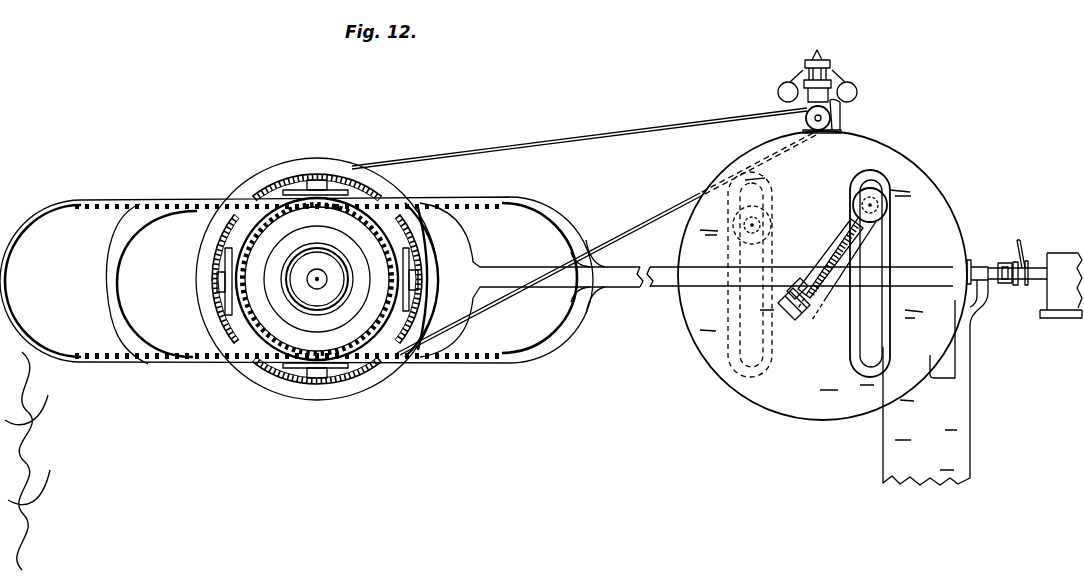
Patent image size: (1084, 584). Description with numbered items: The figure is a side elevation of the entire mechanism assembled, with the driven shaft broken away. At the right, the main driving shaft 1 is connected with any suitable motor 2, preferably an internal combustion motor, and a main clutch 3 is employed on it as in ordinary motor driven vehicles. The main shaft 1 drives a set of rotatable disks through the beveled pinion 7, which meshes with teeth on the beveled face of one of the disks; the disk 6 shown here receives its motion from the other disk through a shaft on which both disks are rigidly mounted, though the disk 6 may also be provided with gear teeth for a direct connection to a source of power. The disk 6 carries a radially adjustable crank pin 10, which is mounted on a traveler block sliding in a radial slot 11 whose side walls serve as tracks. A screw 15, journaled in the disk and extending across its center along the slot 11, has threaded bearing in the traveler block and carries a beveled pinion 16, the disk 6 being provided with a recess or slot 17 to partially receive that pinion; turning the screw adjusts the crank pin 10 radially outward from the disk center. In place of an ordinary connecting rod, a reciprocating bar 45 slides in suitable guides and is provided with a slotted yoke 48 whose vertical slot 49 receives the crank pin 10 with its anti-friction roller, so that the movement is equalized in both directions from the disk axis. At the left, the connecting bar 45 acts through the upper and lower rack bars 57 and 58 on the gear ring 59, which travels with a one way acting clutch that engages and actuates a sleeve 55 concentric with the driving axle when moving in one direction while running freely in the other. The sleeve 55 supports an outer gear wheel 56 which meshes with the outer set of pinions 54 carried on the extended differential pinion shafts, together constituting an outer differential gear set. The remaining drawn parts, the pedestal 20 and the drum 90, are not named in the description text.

The main driving shaft 1 is at (1034, 266).
The motor 2 is at (1061, 285).
The main clutch 3 is at (1017, 280).
The disk 6 is at (924, 180).
The beveled pinion 7 is at (972, 262).
The crank pin 10 is at (742, 223).
The radial slot 11 is at (838, 230).
The screw 15 is at (826, 262).
The beveled pinion 16 is at (790, 322).
The recess or slot 17 is at (812, 318).
The pedestal 20 is at (926, 392).
The reciprocating bar 45 is at (528, 270).
The slotted yoke 48 is at (860, 352).
The slot 49 is at (884, 356).
The outer set of pinions 54 is at (340, 190).
The sleeve 55 is at (303, 280).
The outer gear wheel 56 is at (252, 232).
The upper rack bar 57 is at (118, 201).
The lower rack bar 58 is at (108, 360).
The gear ring 59 is at (262, 318).
The drum 90 is at (317, 279).